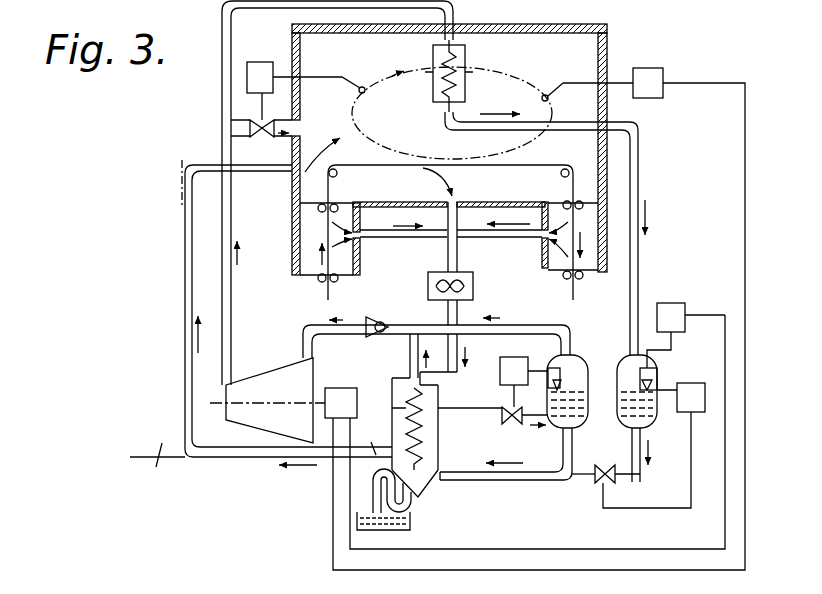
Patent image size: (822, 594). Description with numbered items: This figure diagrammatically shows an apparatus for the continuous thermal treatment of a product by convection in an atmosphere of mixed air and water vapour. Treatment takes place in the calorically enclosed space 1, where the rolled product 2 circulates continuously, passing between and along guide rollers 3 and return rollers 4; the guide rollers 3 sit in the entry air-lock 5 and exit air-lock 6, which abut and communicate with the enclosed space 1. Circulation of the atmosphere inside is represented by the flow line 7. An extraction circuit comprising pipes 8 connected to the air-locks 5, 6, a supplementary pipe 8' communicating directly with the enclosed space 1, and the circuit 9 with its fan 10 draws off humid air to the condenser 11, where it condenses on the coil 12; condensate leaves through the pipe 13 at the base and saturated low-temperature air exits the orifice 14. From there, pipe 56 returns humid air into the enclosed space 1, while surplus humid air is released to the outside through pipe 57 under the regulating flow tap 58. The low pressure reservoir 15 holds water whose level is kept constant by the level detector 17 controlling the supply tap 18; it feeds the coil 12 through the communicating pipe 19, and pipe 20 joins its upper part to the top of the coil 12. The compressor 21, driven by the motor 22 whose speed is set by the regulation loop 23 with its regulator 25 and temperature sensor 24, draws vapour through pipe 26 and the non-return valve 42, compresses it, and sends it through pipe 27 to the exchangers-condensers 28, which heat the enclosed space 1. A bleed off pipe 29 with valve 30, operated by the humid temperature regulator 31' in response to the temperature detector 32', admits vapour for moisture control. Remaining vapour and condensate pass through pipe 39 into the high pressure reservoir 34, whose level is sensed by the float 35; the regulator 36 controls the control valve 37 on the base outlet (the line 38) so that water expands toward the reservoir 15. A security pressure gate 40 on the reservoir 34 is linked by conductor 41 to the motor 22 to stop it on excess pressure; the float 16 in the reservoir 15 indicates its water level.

The enclosed space 1 is at (492, 24).
The rolled product 2 is at (384, 166).
The guide rollers 3 is at (318, 211).
The return rollers 4 is at (338, 177).
The entry air-lock 5 is at (360, 270).
The exit air-lock 6 is at (542, 266).
The flow line 7 is at (540, 164).
The pipes 8 is at (451, 246).
The supplementary pipe 8' is at (454, 184).
The extraction circuit 9 is at (457, 247).
The fan 10 is at (474, 294).
The condenser 11 is at (440, 408).
The coil 12 is at (421, 433).
The pipe 13 is at (413, 495).
The orifice 14 is at (366, 440).
The low pressure reservoir 15 is at (570, 360).
The float 16 is at (559, 387).
The level detector 17 is at (512, 357).
The supply tap 18 is at (511, 426).
The communicating pipe 19 is at (485, 479).
The pipe 20 is at (462, 335).
The compressor 21 is at (273, 384).
The motor 22 is at (347, 403).
The regulation loop 23 is at (333, 548).
The sensor 24 is at (546, 94).
The regulator 25 is at (648, 68).
The pipe 26 is at (353, 336).
The pipe 27 is at (232, 204).
The exchangers-condensers 28 is at (465, 61).
The bleed off pipe 29 is at (247, 128).
The valve 30 is at (278, 122).
The humid temperature regulator 31' is at (258, 59).
The temperature detector 32' is at (327, 70).
The high pressure reservoir 34 is at (643, 356).
The float 35 is at (640, 383).
The regulator 36 is at (694, 386).
The control valve 37 is at (603, 465).
The line 38 is at (579, 478).
The pipe 39 is at (639, 165).
The security pressure gate 40 is at (686, 308).
The conductor 41 is at (433, 549).
The non-return valve 42 is at (383, 320).
The pipe 56 is at (184, 282).
The pipe 57 is at (136, 455).
The regulating flow tap 58 is at (157, 468).